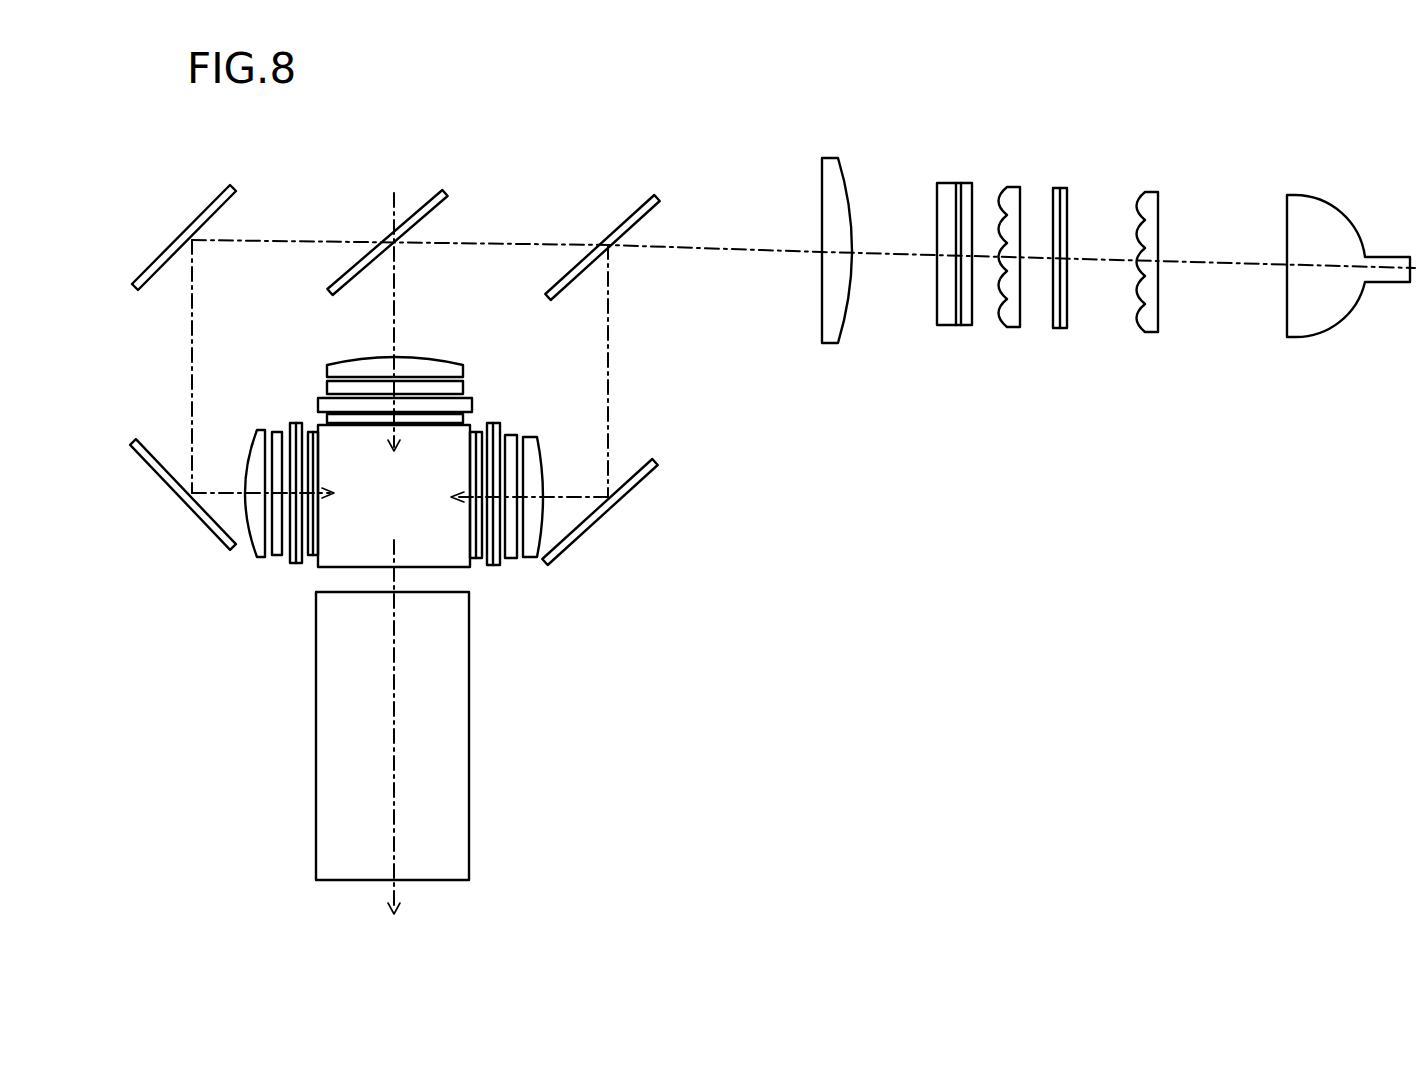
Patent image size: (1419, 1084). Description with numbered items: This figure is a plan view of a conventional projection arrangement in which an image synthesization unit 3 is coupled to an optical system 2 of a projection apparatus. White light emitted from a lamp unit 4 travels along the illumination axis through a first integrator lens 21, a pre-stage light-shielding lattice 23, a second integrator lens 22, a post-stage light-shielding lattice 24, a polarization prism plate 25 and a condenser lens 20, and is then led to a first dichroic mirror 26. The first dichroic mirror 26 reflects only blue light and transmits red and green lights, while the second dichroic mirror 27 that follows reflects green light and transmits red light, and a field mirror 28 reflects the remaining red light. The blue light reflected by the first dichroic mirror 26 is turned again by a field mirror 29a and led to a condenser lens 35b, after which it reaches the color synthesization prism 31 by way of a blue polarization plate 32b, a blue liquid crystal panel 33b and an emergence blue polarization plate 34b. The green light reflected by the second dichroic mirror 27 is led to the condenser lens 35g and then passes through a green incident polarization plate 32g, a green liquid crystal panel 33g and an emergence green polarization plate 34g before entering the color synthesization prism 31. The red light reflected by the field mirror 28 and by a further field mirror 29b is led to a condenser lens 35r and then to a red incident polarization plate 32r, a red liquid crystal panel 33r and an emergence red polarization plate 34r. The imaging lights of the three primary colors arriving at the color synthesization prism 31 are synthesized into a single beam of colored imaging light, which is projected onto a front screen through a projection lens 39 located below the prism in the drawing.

The optical system 2 is at (1041, 392).
The image synthesization unit 3 is at (586, 451).
The lamp unit 4 is at (1317, 310).
The condenser lens 20 is at (822, 327).
The first integrator lens 21 is at (1152, 192).
The second integrator lens 22 is at (1003, 187).
The pre-stage light-shielding lattice 23 is at (1057, 188).
The post-stage light-shielding lattice 24 is at (962, 327).
The polarization prism plate 25 is at (947, 183).
The first dichroic mirror 26 is at (617, 227).
The second dichroic mirror 27 is at (400, 220).
The field mirror 28 is at (198, 220).
The field mirror 29a is at (636, 484).
The field mirror 29b is at (190, 490).
The color synthesization prism 31 is at (347, 463).
The red incident polarization plate 32r is at (277, 556).
The green incident polarization plate 32g is at (462, 381).
The blue polarization plate 32b is at (512, 558).
The red liquid crystal panel 33r is at (296, 565).
The green liquid crystal panel 33g is at (472, 404).
The blue liquid crystal panel 33b is at (493, 566).
The emergence red polarization plate 34r is at (313, 558).
The emergence green polarization plate 34g is at (463, 418).
The emergence blue polarization plate 34b is at (478, 558).
The condenser lens 35r is at (257, 557).
The condenser lens 35g is at (413, 355).
The condenser lens 35b is at (535, 559).
The projection lens 39 is at (469, 824).